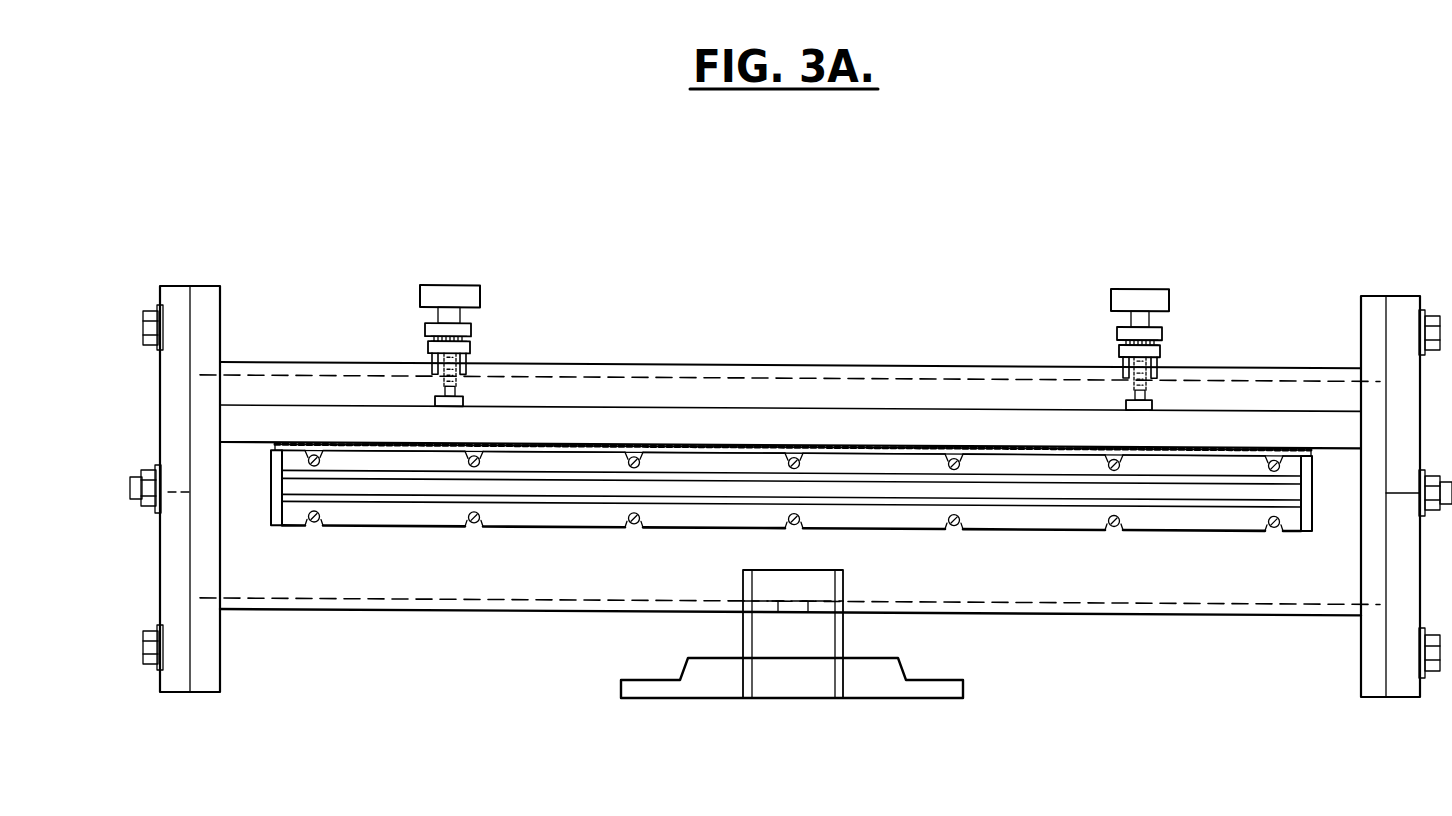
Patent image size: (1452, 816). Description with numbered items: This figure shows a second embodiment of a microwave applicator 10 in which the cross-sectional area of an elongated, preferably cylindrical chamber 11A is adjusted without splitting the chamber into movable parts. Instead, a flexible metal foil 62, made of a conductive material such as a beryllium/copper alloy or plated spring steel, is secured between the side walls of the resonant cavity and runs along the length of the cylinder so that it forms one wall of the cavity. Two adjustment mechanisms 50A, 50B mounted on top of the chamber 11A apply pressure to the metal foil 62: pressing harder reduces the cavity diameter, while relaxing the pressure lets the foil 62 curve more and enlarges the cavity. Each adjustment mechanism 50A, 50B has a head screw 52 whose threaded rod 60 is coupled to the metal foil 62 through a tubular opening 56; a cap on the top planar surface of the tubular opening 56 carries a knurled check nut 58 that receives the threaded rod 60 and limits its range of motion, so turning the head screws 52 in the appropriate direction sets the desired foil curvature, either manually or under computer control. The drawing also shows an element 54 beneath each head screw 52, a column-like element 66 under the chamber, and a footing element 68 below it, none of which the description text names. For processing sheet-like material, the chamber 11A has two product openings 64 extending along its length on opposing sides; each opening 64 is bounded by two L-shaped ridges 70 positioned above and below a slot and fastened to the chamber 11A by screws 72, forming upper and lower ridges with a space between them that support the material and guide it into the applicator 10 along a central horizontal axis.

The applicator 10 is at (925, 266).
The elongated chamber 11A is at (655, 364).
The adjustment mechanism 50A is at (472, 327).
The adjustment mechanism 50B is at (1165, 324).
The head screw 52 is at (450, 283).
The plate 54 is at (427, 325).
The tubular opening 56 is at (428, 347).
The knurled check nut 58 is at (470, 357).
The threaded rod 60 is at (431, 357).
The metal foil 62 is at (763, 405).
The product opening 64 is at (372, 485).
The stand column 66 is at (741, 637).
The base 68 is at (912, 700).
The L-shaped ridge 70 is at (1145, 503).
The screw 72 is at (474, 522).